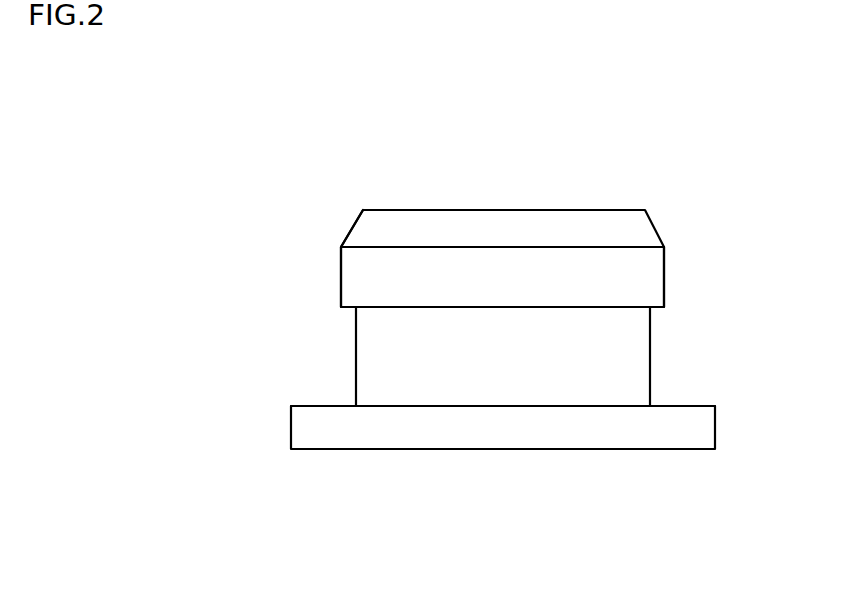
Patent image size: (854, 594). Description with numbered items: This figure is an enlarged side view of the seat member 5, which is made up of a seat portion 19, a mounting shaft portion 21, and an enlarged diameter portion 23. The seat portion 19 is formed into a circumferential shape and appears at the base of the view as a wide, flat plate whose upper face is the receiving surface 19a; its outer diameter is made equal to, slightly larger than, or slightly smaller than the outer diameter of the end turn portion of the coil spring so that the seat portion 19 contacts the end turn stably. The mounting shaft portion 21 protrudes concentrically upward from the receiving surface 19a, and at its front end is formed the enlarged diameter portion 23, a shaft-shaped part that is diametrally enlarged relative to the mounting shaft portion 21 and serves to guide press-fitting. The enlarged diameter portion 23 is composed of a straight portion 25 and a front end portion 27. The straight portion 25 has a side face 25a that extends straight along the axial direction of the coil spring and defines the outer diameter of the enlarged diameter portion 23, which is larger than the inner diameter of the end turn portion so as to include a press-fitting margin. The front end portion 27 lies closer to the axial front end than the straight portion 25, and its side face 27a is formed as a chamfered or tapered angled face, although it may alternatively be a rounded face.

The seat member 5 is at (638, 189).
The seat portion 19 is at (330, 423).
The receiving surface 19a is at (312, 406).
The mounting shaft portion 21 is at (597, 362).
The enlarged diameter portion 23 is at (664, 265).
The straight portion 25 is at (393, 247).
The side face 25a is at (341, 270).
The front end portion 27 is at (528, 210).
The side face 27a is at (353, 225).